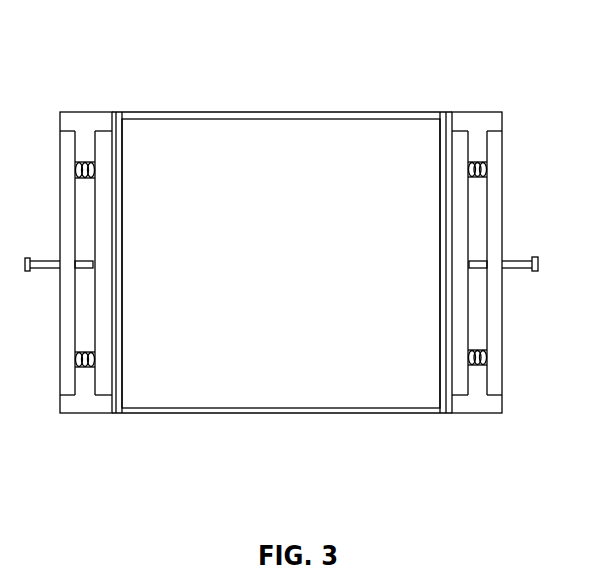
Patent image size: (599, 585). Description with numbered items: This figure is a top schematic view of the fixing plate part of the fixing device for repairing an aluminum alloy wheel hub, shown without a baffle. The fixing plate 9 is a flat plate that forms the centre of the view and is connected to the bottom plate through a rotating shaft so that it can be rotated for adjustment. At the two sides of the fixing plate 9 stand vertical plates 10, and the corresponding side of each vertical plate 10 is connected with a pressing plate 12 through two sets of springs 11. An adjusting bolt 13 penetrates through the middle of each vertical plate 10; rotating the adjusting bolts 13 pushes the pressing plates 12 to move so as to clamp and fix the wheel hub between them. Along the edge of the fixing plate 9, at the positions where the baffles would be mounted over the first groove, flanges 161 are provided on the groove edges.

The fixing plate 9 is at (281, 413).
The vertical plate 10 is at (68, 397).
The spring 11 is at (487, 163).
The pressing plate 12 is at (458, 397).
The adjusting bolt 13 is at (478, 258).
The flange 161 is at (123, 175).